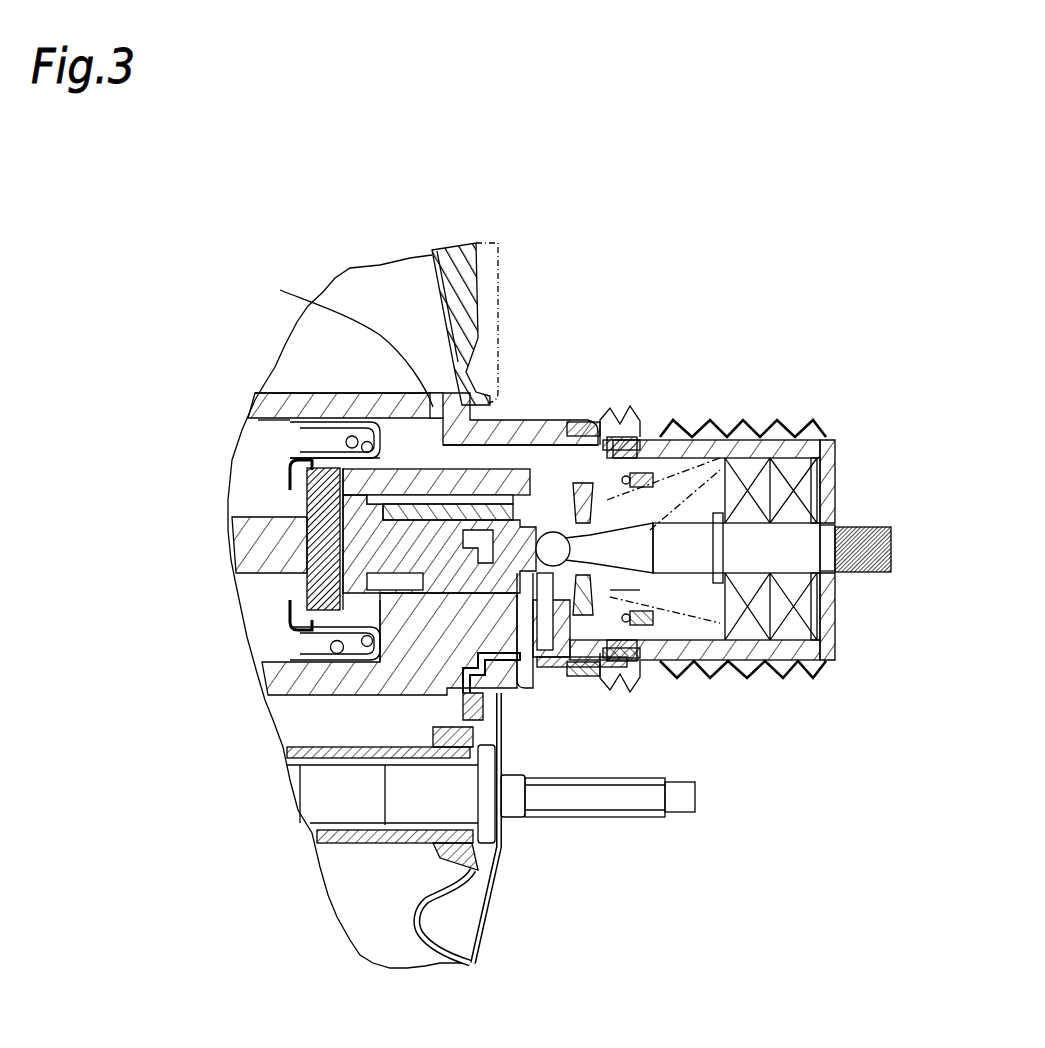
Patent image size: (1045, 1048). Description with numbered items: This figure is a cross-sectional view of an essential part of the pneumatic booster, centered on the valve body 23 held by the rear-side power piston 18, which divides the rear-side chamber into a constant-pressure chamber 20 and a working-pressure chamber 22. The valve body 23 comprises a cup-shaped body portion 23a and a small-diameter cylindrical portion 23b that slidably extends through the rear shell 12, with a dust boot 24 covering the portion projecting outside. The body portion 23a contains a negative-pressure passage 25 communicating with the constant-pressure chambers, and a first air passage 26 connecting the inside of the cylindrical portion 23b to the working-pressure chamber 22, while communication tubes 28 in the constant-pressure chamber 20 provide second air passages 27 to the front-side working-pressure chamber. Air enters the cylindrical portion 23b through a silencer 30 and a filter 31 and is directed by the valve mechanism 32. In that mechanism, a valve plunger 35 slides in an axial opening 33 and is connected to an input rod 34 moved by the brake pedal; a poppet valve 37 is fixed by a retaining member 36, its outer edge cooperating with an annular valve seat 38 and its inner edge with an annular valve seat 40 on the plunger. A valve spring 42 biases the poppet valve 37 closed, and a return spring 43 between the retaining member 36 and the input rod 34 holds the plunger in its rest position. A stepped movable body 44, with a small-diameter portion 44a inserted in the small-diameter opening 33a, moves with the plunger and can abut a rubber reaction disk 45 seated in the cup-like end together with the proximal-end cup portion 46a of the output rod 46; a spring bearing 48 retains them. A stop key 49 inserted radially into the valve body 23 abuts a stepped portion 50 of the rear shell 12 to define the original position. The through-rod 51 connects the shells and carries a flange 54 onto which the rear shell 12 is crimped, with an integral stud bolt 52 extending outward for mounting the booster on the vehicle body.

The rear shell 12 is at (494, 886).
The power piston 18 is at (438, 314).
The constant-pressure chamber 20 is at (367, 930).
The working-pressure chamber 22 is at (467, 930).
The valve body 23 is at (246, 410).
The cup-shaped body portion 23a is at (282, 400).
The small-diameter cylindrical portion 23b is at (757, 652).
The dust boot 24 is at (825, 667).
The negative-pressure passage 25 is at (427, 447).
The first air passage 26 is at (565, 660).
The second air passage 27 is at (385, 825).
The communication tube 28 is at (353, 833).
The silencer 30 is at (810, 487).
The filter 31 is at (763, 612).
The valve mechanism 32 is at (620, 465).
The axial opening 33 is at (300, 480).
The small-diameter opening 33a is at (355, 515).
The input rod 34 is at (870, 525).
The valve plunger 35 is at (500, 490).
The retaining member 36 is at (683, 468).
The poppet valve 37 is at (638, 660).
The annular valve seat 38 is at (578, 462).
The annular valve seat 40 is at (580, 640).
The valve spring 42 is at (712, 645).
The return spring 43 is at (748, 438).
The stepped movable body 44 is at (445, 577).
The small-diameter portion 44a is at (345, 660).
The reaction disk 45 is at (320, 575).
The output rod 46 is at (243, 553).
The proximal-end cup portion 46a is at (320, 448).
The spring bearing 48 is at (300, 620).
The stop key 49 is at (345, 745).
The stepped portion 50 is at (520, 672).
The through-rod 51 is at (407, 810).
The stud bolt 52 is at (692, 800).
The flange 54 is at (495, 805).